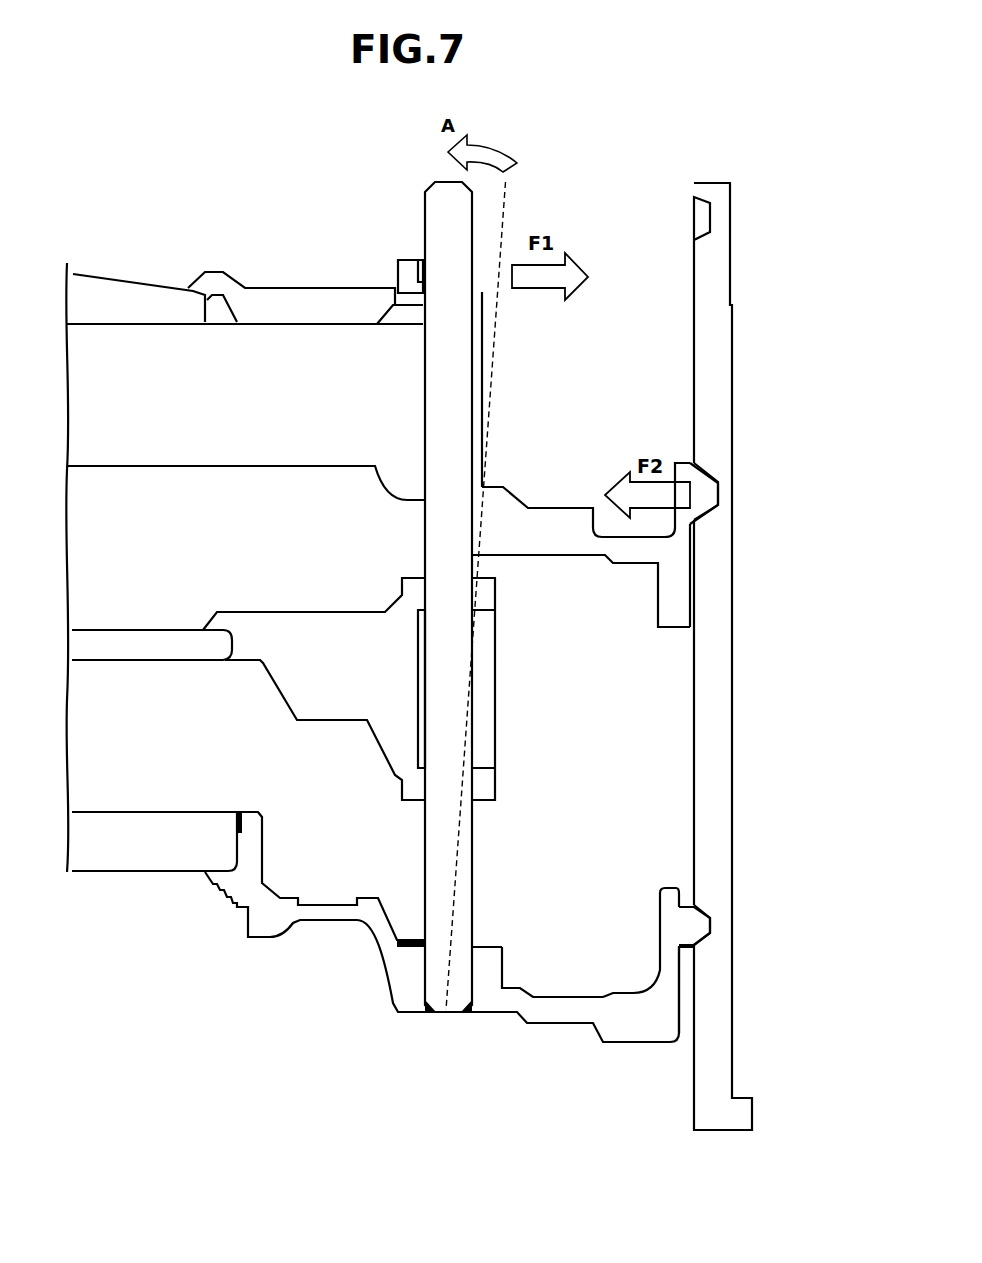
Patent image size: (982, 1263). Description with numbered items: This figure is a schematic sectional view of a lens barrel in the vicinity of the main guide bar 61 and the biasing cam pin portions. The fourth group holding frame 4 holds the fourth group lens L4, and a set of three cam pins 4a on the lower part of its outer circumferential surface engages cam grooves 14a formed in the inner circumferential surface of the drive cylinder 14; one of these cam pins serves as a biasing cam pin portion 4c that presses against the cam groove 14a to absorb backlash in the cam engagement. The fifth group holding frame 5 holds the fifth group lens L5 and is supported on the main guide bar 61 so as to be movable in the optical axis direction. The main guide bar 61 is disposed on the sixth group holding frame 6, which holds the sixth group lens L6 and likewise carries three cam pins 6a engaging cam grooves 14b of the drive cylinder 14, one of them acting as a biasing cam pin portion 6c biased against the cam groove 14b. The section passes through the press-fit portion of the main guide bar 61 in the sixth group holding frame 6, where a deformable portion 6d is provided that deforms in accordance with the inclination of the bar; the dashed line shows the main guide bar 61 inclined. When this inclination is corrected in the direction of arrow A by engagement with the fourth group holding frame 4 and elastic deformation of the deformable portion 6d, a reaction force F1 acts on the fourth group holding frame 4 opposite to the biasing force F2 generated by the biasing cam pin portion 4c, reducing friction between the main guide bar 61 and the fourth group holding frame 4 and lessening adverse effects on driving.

The fourth group holding frame 4 is at (298, 297).
The cam pins 4a is at (712, 497).
The biasing cam pin portion 4c is at (682, 530).
The fifth group holding frame 5 is at (302, 630).
The sixth group holding frame 6 is at (252, 823).
The cam pins 6a is at (703, 927).
The biasing cam pin portion 6c is at (672, 965).
The deformable portion 6d is at (327, 912).
The drive cylinder 14 is at (715, 258).
The cam grooves 14a is at (705, 472).
The cam grooves 14b is at (702, 910).
The main guide bar 61 is at (437, 1007).
The fourth group lens L4 is at (128, 297).
The fifth group lens L5 is at (128, 638).
The sixth group lens L6 is at (138, 823).